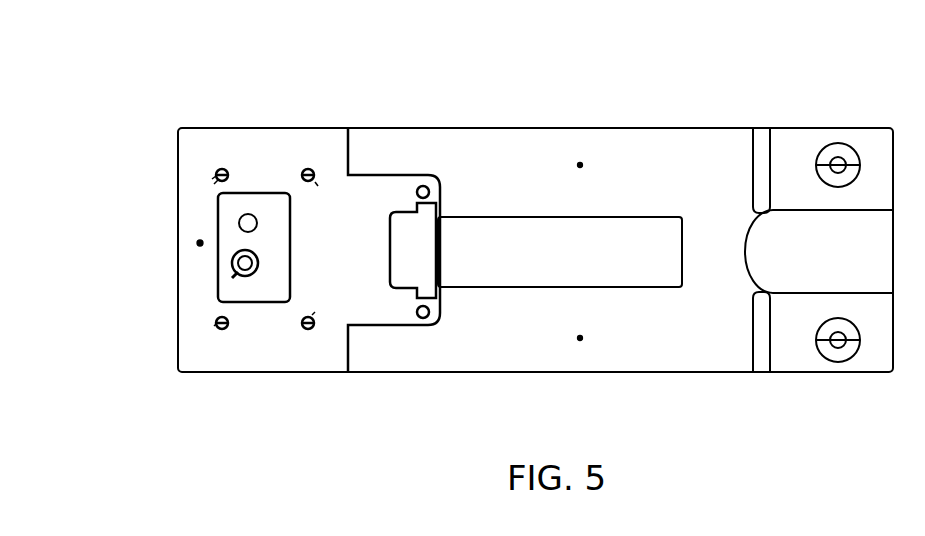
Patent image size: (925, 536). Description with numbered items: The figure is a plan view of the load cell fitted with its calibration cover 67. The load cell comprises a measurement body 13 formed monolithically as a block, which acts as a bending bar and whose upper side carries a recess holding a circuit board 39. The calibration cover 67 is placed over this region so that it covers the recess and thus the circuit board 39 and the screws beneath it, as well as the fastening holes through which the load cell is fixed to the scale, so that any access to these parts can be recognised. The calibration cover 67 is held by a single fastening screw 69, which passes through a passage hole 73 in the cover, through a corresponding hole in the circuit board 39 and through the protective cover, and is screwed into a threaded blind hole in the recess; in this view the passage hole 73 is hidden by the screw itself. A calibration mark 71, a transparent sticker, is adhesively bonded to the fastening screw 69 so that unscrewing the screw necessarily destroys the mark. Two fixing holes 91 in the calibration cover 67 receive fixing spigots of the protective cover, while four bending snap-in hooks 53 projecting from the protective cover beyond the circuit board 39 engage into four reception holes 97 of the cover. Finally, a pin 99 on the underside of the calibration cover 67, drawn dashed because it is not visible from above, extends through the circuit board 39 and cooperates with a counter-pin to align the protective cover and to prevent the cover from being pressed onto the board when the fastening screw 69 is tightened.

The measurement body 13 is at (507, 142).
The calibration cover 67 is at (271, 145).
The calibration mark 71 is at (262, 293).
The pin 99 is at (239, 221).
The fastening screw 69 is at (232, 264).
The passage hole 73 is at (238, 275).
The circuit board 39 is at (422, 267).
The fixing holes 91 is at (424, 184).
The bending snap-in hooks 53 is at (218, 170).
The reception holes 97 is at (215, 179).